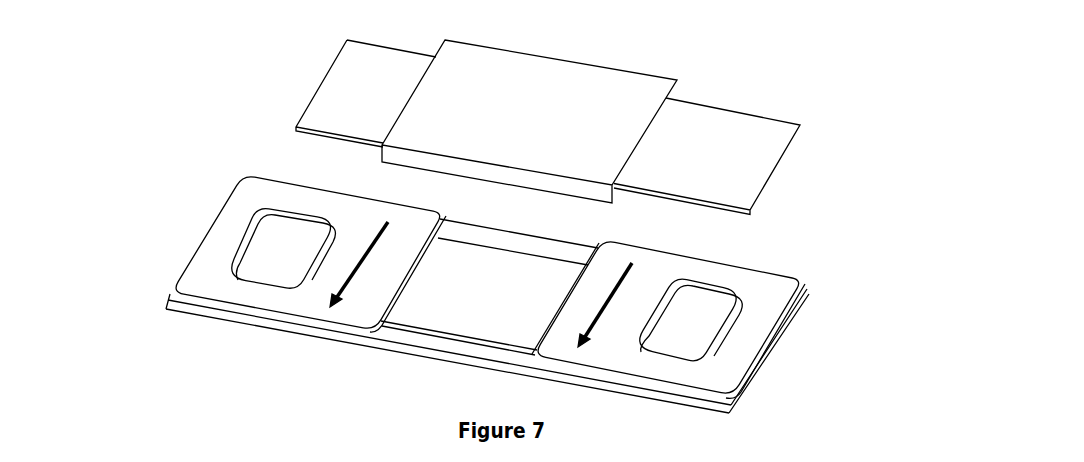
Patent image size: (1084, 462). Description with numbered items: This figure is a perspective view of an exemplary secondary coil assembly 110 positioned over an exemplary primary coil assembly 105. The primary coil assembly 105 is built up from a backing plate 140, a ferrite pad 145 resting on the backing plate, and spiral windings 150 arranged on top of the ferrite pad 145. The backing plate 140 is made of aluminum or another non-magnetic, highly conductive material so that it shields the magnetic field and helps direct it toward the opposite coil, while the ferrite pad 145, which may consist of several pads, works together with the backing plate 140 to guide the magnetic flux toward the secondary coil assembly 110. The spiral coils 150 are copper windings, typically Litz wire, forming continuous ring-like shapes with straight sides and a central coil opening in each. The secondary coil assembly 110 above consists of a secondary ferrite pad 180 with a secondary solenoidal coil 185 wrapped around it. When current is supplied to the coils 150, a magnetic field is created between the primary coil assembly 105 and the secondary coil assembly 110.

The primary coil assembly 105 is at (490, 295).
The secondary coil assembly 110 is at (578, 127).
The backing plate 140 is at (497, 353).
The ferrite pad 145 is at (479, 311).
The spiral windings 150 is at (192, 284).
The secondary ferrite pad 180 is at (342, 101).
The secondary solenoidal coil 185 is at (500, 92).